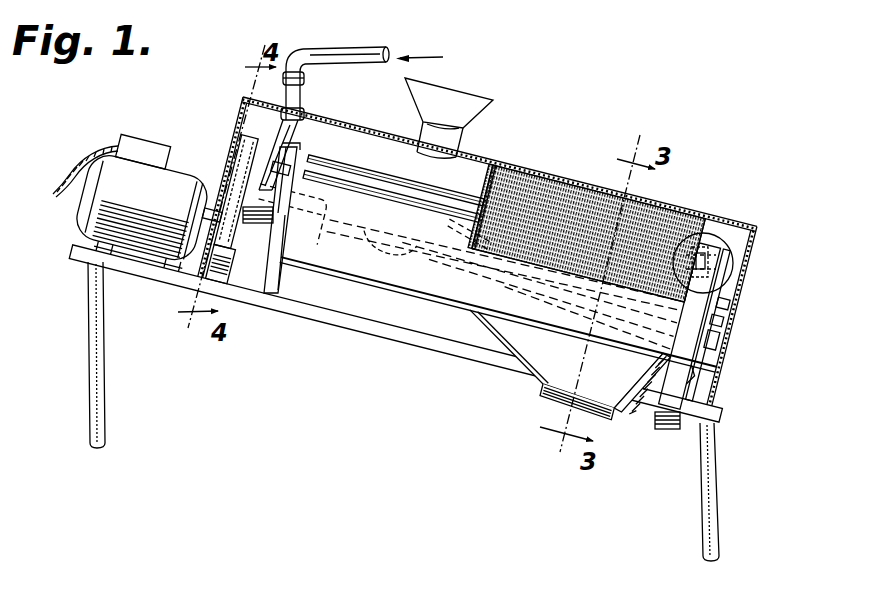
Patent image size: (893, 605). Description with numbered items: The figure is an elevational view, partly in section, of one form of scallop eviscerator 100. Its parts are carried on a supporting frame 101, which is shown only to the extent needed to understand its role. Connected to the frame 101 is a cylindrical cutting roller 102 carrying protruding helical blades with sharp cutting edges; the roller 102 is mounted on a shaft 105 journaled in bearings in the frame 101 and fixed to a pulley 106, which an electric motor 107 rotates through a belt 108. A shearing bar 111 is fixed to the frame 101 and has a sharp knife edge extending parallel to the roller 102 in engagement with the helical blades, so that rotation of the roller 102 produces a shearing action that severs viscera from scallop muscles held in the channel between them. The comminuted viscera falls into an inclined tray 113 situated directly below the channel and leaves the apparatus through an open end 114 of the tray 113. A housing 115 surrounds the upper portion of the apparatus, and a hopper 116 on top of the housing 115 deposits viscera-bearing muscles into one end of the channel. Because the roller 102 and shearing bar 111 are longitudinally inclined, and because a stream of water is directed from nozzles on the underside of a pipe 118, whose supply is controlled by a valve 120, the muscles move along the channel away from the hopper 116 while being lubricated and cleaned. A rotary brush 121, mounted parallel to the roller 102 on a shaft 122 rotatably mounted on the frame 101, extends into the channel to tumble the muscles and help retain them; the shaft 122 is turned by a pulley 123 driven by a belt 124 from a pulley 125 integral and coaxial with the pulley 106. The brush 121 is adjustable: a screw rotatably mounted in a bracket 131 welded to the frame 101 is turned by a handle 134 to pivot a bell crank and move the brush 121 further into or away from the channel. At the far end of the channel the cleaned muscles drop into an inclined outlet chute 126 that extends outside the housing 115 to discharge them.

The scallop eviscerator 100 is at (84, 311).
The supporting frame 101 is at (98, 421).
The cutting roller 102 is at (400, 256).
The shaft 105 is at (295, 235).
The pulley 106 is at (222, 253).
The electric motor 107 is at (90, 217).
The belt 108 is at (242, 166).
The shearing bar 111 is at (433, 290).
The tray 113 is at (612, 369).
The open end 114 is at (603, 413).
The housing 115 is at (507, 158).
The hopper 116 is at (477, 97).
The pipe 118 is at (398, 204).
The valve 120 is at (295, 123).
The rotary brush 121 is at (700, 230).
The shaft 122 is at (375, 176).
The pulley 123 is at (247, 110).
The belt 124 is at (277, 145).
The pulley 125 is at (268, 224).
The outlet chute 126 is at (673, 423).
The bracket 131 is at (680, 368).
The handle 134 is at (724, 273).